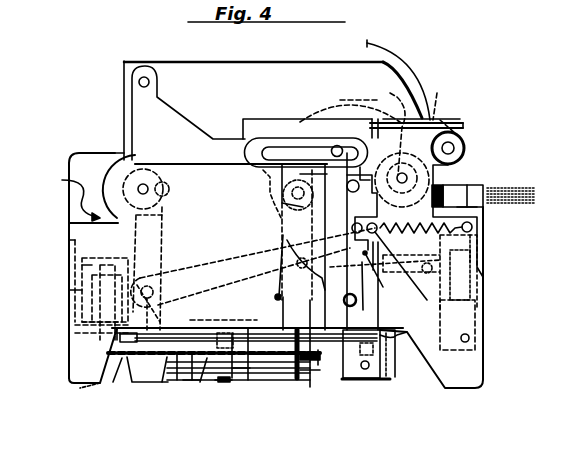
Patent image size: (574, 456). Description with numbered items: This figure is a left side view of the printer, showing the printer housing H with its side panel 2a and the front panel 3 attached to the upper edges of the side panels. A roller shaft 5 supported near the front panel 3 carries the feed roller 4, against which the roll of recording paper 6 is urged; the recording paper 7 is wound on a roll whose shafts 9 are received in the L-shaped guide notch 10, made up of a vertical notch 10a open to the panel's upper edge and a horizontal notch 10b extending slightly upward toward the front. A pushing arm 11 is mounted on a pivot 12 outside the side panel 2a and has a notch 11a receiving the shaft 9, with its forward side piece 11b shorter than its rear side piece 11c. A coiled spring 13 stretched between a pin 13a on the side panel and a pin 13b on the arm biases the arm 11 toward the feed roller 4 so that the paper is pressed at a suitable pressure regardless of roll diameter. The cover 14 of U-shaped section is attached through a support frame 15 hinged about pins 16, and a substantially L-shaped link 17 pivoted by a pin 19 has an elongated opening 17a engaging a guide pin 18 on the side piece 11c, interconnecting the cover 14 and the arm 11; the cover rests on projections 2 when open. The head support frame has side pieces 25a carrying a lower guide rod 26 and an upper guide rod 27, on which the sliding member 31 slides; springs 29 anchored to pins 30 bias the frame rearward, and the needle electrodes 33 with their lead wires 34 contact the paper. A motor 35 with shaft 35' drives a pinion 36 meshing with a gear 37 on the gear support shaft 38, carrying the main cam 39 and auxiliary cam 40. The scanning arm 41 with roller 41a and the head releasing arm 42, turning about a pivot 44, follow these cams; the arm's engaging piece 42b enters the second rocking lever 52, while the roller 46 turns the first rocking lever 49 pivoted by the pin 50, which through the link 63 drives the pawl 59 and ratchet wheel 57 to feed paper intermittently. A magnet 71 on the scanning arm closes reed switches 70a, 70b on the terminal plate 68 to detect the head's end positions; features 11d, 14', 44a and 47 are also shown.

The projection 2 is at (70, 240).
The side panel 2a is at (68, 290).
The front panel 3 is at (455, 125).
The feed roller 4 is at (466, 133).
The roller shaft 5 is at (466, 149).
The roll of recording paper 6 is at (276, 238).
The recording paper 7 is at (394, 55).
The shaft 9 is at (346, 140).
The guide notch 10 is at (280, 205).
The vertical notch 10a is at (276, 182).
The horizontal notch 10b is at (286, 240).
The pushing arm 11 is at (326, 324).
The notch 11a is at (378, 272).
The side piece 11b is at (412, 88).
The side piece 11c is at (307, 150).
The bar pivot 11d is at (355, 217).
The pivot 12 is at (388, 290).
The coiled spring 13 is at (295, 342).
The pin 13a is at (285, 276).
The pin 13b is at (360, 265).
The cover 14 is at (253, 45).
The plate extension 14' is at (417, 98).
The support frame 15 is at (118, 150).
The pin 16 is at (144, 184).
The link 17 is at (124, 108).
The elongated opening 17a is at (243, 119).
The guide pin 18 is at (333, 140).
The pin 19 is at (124, 80).
The side piece 25a is at (480, 280).
The lower guide rod 26 is at (484, 338).
The upper guide rod 27 is at (473, 222).
The spring 29 is at (482, 243).
The pin 30 is at (426, 290).
The sliding member 31 is at (480, 226).
The needle electrode 33 is at (443, 187).
The lead wire 34 is at (528, 199).
The motor 35 is at (66, 264).
The motor shaft 35' is at (67, 395).
The pinion 36 is at (72, 353).
The gear 37 is at (240, 382).
The gear support shaft 38 is at (222, 382).
The main cam 39 is at (178, 382).
The auxiliary cam 40 is at (194, 382).
The scanning arm 41 is at (358, 381).
The roller 41a is at (232, 382).
The head releasing arm 42 is at (312, 380).
The engaging piece 42b is at (298, 380).
The pivot 44 is at (278, 380).
The rail stop 44a is at (288, 348).
The roller 46 is at (117, 384).
The guide wall 47 is at (72, 301).
The first rocking lever 49 is at (168, 248).
The pin 50 is at (170, 190).
The second rocking lever 52 is at (275, 297).
The ratchet wheel 57 is at (395, 117).
The pawl 59 is at (475, 185).
The link 63 is at (185, 275).
The terminal plate 68 is at (344, 381).
The reed switch 70a is at (390, 381).
The reed switch 70b is at (390, 405).
The magnet 71 is at (394, 345).
The printer housing H is at (69, 197).